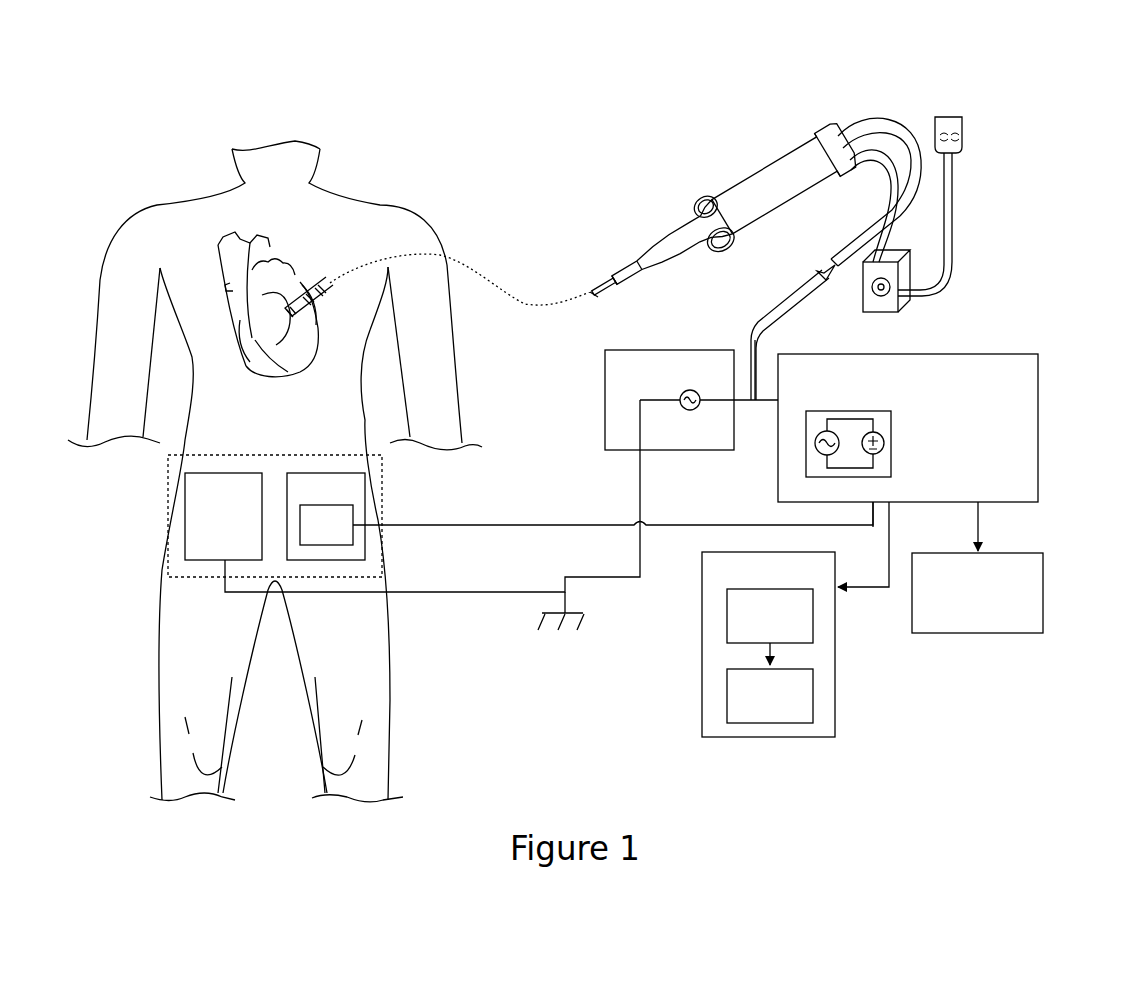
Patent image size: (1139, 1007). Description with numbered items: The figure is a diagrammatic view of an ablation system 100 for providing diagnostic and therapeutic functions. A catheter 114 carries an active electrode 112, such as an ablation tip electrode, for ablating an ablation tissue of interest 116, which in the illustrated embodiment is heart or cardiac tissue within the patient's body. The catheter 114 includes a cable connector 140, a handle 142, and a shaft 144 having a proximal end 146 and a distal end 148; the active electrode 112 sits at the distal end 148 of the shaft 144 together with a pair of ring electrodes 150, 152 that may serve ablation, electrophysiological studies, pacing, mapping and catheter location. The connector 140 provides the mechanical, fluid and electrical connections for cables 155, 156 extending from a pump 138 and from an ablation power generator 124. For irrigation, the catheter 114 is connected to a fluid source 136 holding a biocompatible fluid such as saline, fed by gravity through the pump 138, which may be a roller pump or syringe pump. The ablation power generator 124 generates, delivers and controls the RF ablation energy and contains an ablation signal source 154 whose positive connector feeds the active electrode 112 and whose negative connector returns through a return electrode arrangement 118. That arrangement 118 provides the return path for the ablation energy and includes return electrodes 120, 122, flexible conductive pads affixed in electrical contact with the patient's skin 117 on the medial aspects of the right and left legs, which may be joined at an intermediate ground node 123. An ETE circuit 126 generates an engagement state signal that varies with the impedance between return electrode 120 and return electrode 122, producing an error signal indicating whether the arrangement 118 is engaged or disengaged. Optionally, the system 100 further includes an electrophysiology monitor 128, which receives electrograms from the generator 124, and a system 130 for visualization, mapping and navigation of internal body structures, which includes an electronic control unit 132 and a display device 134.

The ablation system 100 is at (158, 134).
The active electrode 112 is at (300, 372).
The catheter 114 is at (708, 186).
The ablation tissue of interest 116 is at (330, 335).
The patient's skin 117 is at (177, 606).
The return electrode arrangement 118 is at (170, 507).
The return electrode 120 is at (197, 493).
The return electrode 122 is at (355, 492).
The intermediate ground node 123 is at (585, 622).
The ablation power generator 124 is at (1038, 380).
The ETE circuit 126 is at (705, 452).
The electrophysiology monitor 128 is at (1043, 570).
The system for visualization, mapping and navigation 130 is at (836, 732).
The electronic control unit 132 is at (813, 619).
The display device 134 is at (813, 693).
The fluid source 136 is at (963, 128).
The pump 138 is at (914, 243).
The cable connector 140 is at (826, 148).
The handle 142 is at (762, 176).
The shaft 144 is at (598, 286).
The proximal end 146 is at (627, 293).
The distal end 148 is at (283, 266).
The ring electrode 150 is at (316, 300).
The ring electrode 152 is at (333, 290).
The ablation signal source 154 is at (891, 430).
The cable 155 is at (898, 126).
The cable 156 is at (876, 166).